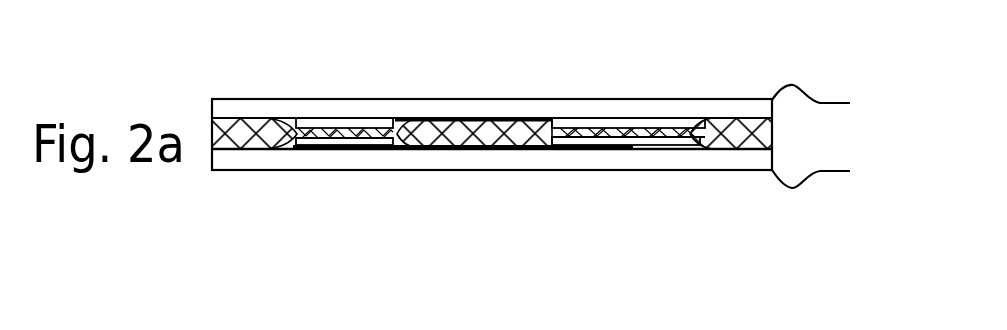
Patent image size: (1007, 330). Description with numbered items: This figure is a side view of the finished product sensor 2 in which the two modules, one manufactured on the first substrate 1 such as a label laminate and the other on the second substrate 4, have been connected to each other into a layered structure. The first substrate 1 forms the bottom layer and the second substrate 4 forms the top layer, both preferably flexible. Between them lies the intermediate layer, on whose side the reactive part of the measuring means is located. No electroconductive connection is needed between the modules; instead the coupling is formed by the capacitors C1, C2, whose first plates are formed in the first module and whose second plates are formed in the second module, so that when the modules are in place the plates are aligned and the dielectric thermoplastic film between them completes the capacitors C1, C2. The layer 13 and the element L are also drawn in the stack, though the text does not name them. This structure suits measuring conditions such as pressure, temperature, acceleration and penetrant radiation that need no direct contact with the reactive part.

The product sensor 2 is at (717, 255).
The second substrate 4 is at (547, 98).
The first substrate 1 is at (549, 172).
The conductive layer 13 is at (480, 117).
The capacitor C1 is at (342, 158).
The capacitor C2 is at (627, 158).
The inductor / intermediate layer L is at (478, 158).